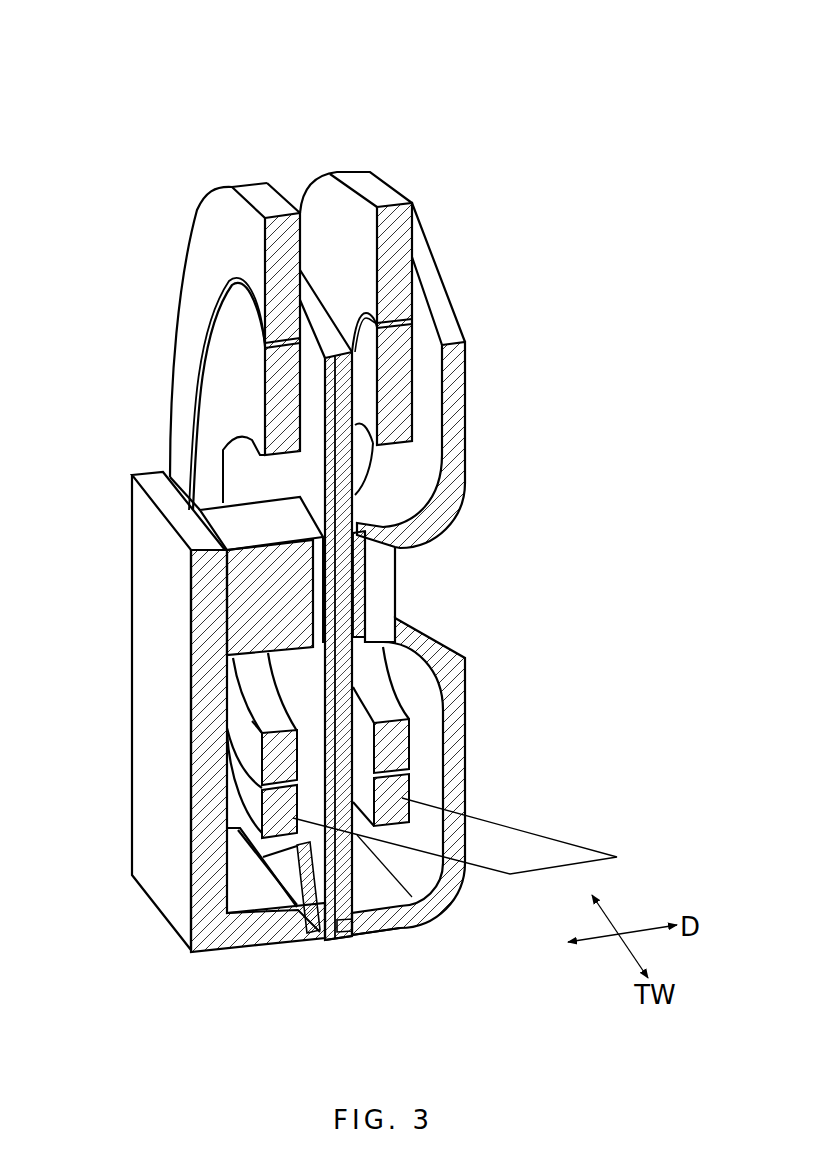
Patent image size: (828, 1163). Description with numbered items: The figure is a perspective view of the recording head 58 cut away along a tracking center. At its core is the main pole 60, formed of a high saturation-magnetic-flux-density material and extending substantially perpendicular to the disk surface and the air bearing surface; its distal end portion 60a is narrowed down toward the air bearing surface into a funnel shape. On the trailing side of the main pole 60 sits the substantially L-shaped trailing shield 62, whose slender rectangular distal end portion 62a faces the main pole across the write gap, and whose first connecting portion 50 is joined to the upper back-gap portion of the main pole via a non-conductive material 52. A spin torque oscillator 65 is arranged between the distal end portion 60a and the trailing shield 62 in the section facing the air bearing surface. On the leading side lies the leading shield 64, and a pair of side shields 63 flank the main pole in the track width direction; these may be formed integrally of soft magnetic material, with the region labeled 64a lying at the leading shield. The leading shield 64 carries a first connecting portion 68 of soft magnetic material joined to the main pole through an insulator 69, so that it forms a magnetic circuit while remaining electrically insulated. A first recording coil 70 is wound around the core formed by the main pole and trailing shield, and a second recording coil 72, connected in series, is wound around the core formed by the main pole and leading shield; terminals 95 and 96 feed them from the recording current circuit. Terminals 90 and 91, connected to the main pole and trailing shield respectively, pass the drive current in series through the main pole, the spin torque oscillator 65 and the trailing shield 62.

The recording head 58 is at (503, 273).
The first connecting portion 50 is at (383, 585).
The non-conductive material 52 is at (363, 558).
The main pole 60 is at (333, 870).
The distal end portion 60a is at (325, 940).
The trailing shield 62 is at (468, 738).
The distal end portion 62a is at (423, 917).
The side shields 63 is at (285, 873).
The leading shield 64 is at (132, 755).
The bottom plate 64a is at (267, 937).
The spin torque oscillator 65 is at (343, 938).
The first connecting portion 68 is at (240, 592).
The insulator 69 is at (323, 610).
The first recording coil 70 is at (415, 228).
The second recording coil 72 is at (197, 232).
The terminal 90 is at (330, 355).
The terminal 91 is at (455, 350).
The terminal 95 is at (393, 215).
The terminal 96 is at (282, 228).